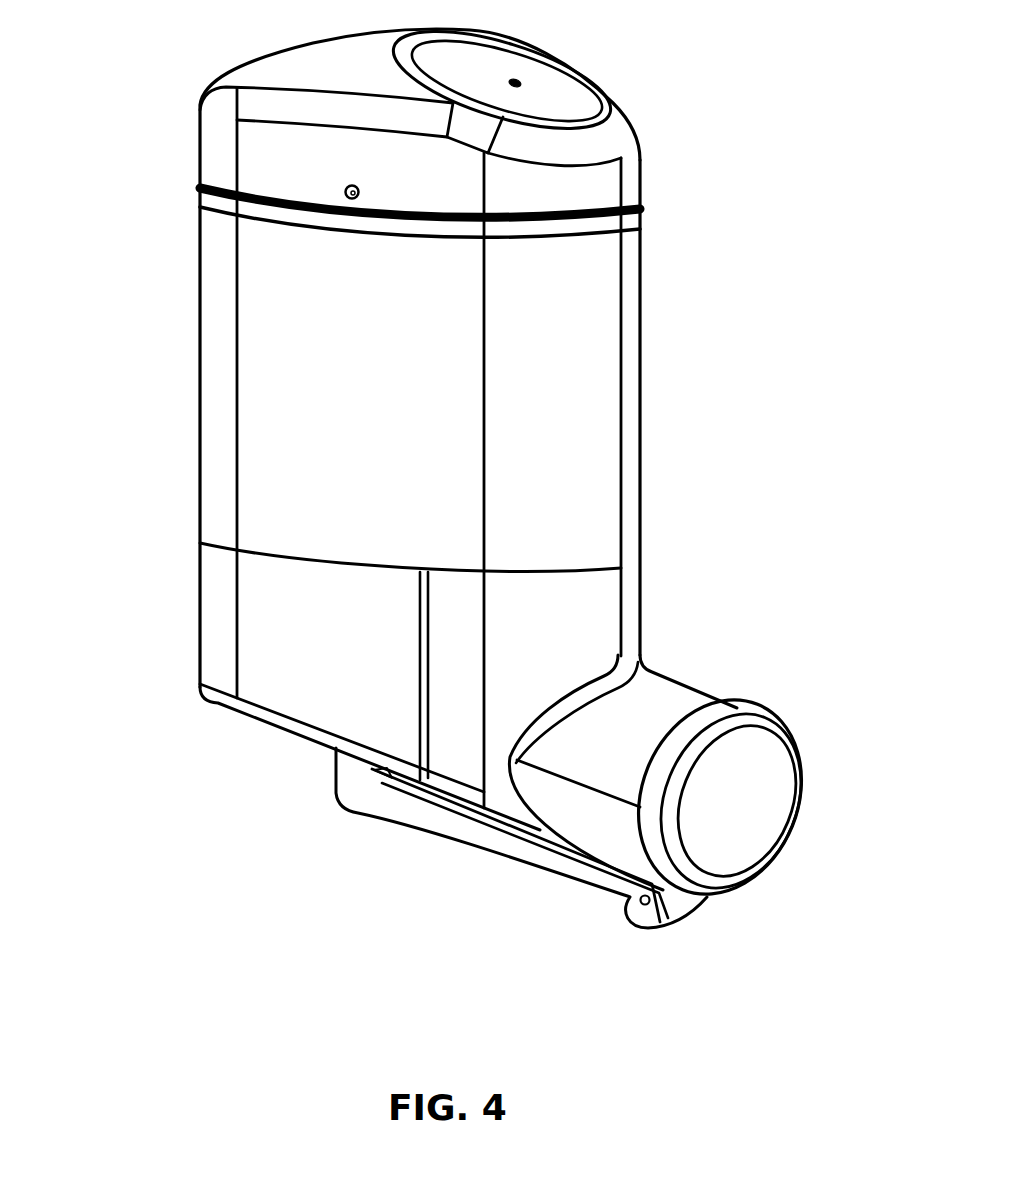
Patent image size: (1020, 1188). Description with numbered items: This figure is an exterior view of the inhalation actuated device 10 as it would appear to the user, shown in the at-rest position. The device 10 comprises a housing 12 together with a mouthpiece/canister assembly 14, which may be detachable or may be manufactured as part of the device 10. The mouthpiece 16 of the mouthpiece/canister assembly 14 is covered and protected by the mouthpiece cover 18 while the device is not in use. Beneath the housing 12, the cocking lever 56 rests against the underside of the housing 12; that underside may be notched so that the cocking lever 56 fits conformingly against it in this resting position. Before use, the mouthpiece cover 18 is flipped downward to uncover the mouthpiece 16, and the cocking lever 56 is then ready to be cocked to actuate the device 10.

The inhalation actuated device 10 is at (140, 493).
The housing 12 is at (197, 597).
The mouthpiece/canister assembly 14 is at (642, 582).
The mouthpiece 16 is at (690, 687).
The mouthpiece cover 18 is at (787, 712).
The cocking lever 56 is at (500, 853).